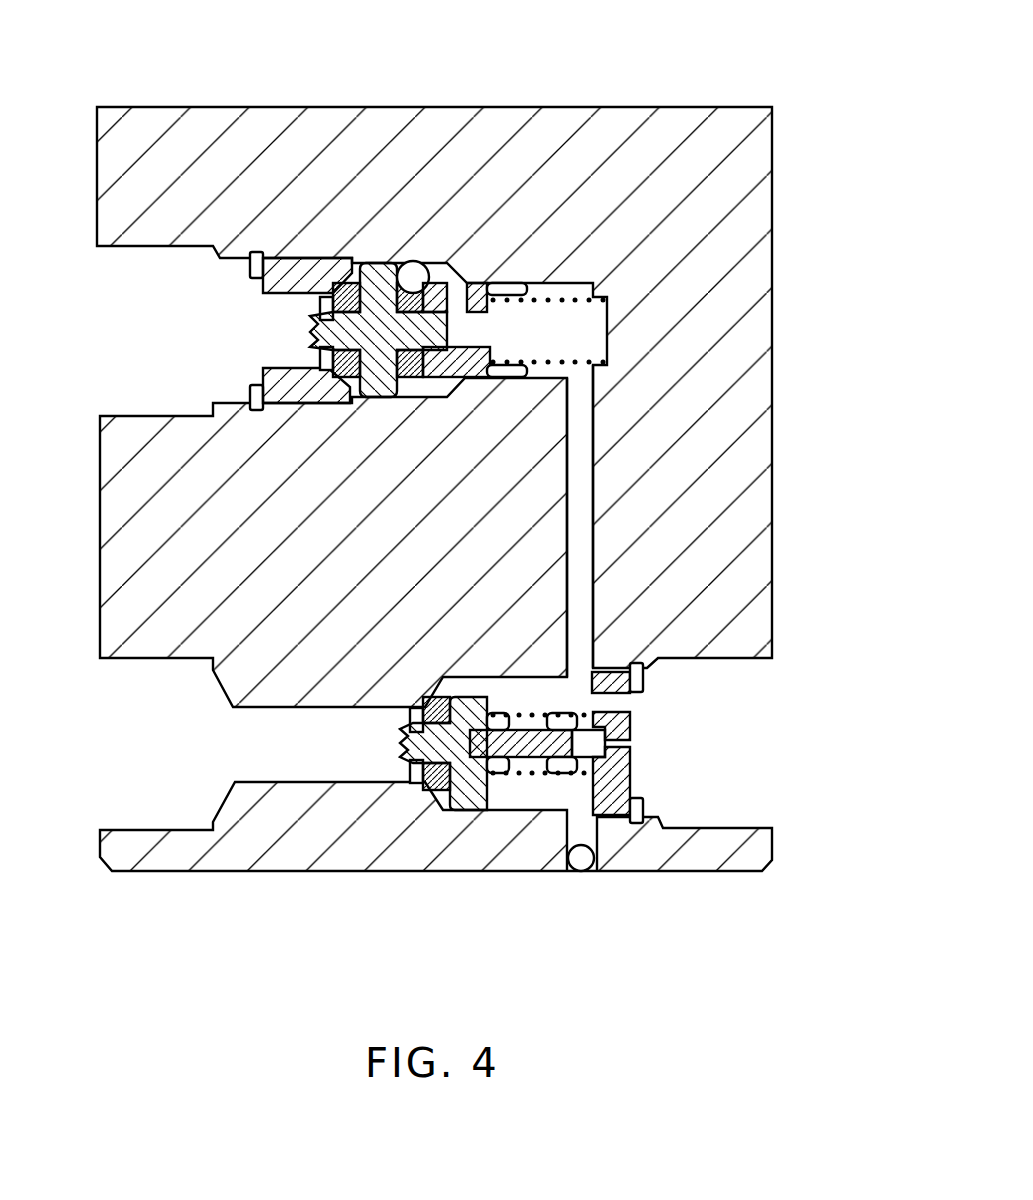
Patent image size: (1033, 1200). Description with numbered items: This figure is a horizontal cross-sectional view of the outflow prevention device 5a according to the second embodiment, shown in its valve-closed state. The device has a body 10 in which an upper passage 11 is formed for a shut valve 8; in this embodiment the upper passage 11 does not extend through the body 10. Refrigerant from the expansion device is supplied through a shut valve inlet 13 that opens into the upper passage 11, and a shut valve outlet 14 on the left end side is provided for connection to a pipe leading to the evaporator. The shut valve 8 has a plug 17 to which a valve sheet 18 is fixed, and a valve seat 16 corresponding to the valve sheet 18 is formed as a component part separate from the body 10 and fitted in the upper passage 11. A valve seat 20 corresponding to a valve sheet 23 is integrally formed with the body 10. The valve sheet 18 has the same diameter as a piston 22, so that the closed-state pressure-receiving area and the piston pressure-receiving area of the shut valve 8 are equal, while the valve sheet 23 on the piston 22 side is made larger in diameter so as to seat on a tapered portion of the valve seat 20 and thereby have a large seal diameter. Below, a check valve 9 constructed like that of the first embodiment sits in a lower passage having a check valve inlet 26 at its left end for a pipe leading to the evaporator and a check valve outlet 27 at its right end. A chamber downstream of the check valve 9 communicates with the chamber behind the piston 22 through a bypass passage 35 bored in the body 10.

The outflow prevention device 5a is at (706, 70).
The body 10 is at (772, 160).
The shut valve outlet 14 is at (135, 280).
The shut valve 8 is at (448, 214).
The valve seat 16 is at (322, 260).
The valve sheet 18 is at (358, 278).
The plug 17 is at (388, 272).
The shut valve inlet 13 is at (413, 270).
The valve sheet 23 is at (428, 262).
The valve seat 20 is at (462, 282).
The piston 22 is at (513, 282).
The upper passage 11 is at (595, 327).
The bypass passage 35 is at (590, 538).
The check valve inlet 26 is at (127, 727).
The check valve outlet 27 is at (738, 753).
The check valve 9 is at (382, 745).